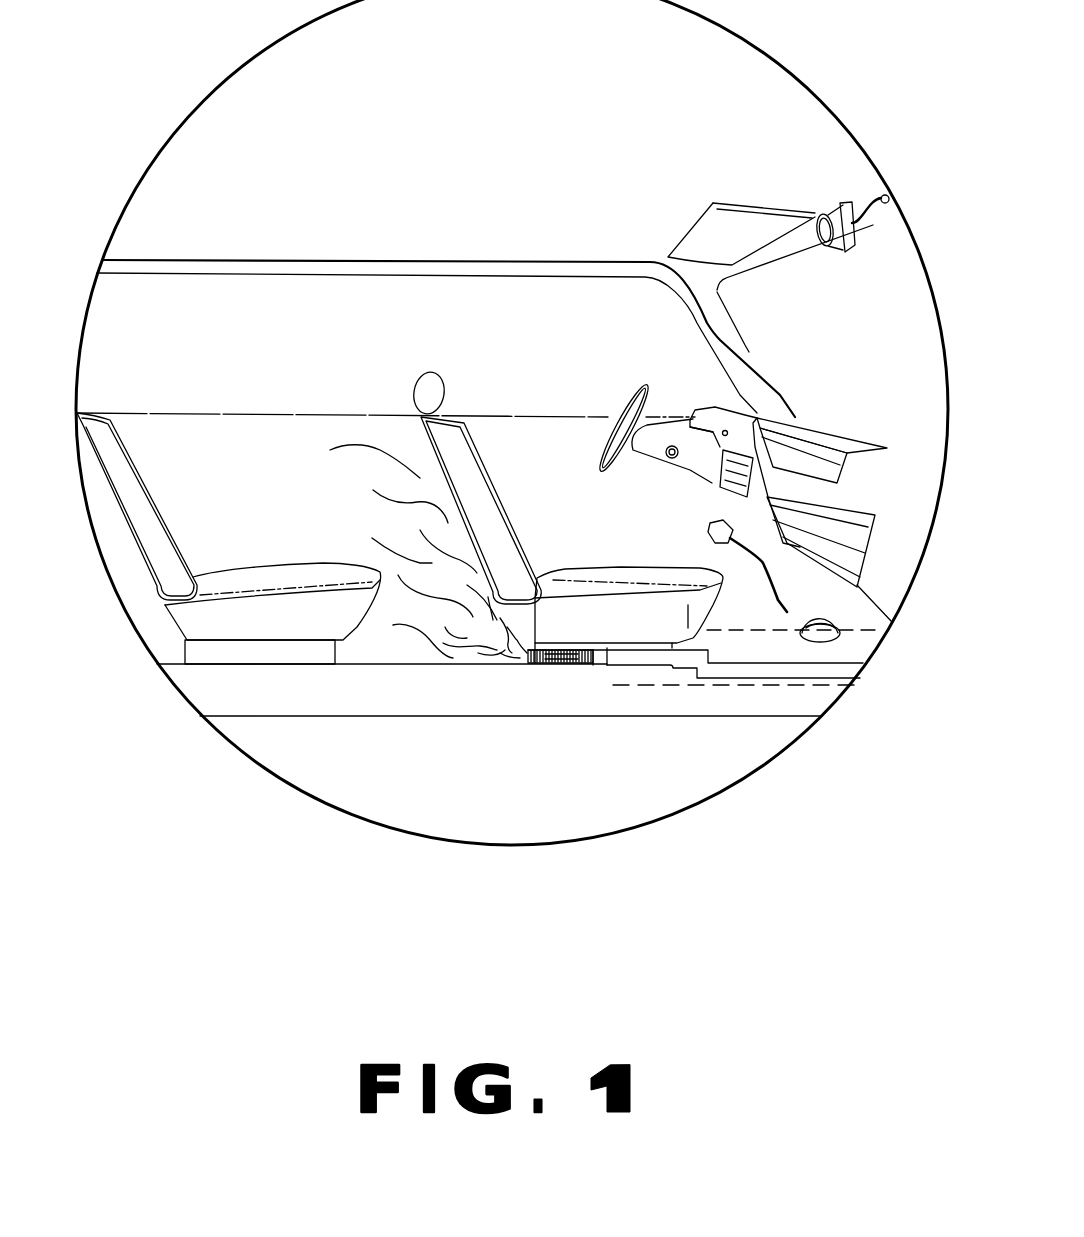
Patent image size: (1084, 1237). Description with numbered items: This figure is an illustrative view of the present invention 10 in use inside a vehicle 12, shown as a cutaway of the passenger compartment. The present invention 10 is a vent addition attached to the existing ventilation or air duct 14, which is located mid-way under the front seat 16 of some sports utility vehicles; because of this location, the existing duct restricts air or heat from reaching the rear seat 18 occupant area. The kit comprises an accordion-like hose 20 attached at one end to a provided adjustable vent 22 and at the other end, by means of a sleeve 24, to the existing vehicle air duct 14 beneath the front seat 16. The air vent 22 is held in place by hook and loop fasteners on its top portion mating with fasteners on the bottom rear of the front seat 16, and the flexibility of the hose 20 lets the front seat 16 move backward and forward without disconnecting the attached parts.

The present invention 10 is at (577, 672).
The vehicle 12 is at (867, 488).
The existing ventilation or air duct 14 is at (650, 655).
The front seat 16 is at (463, 420).
The rear seat 18 is at (279, 568).
The accordion-like hose 20 is at (553, 662).
The adjustable vent 22 is at (528, 662).
The sleeve 24 is at (600, 668).